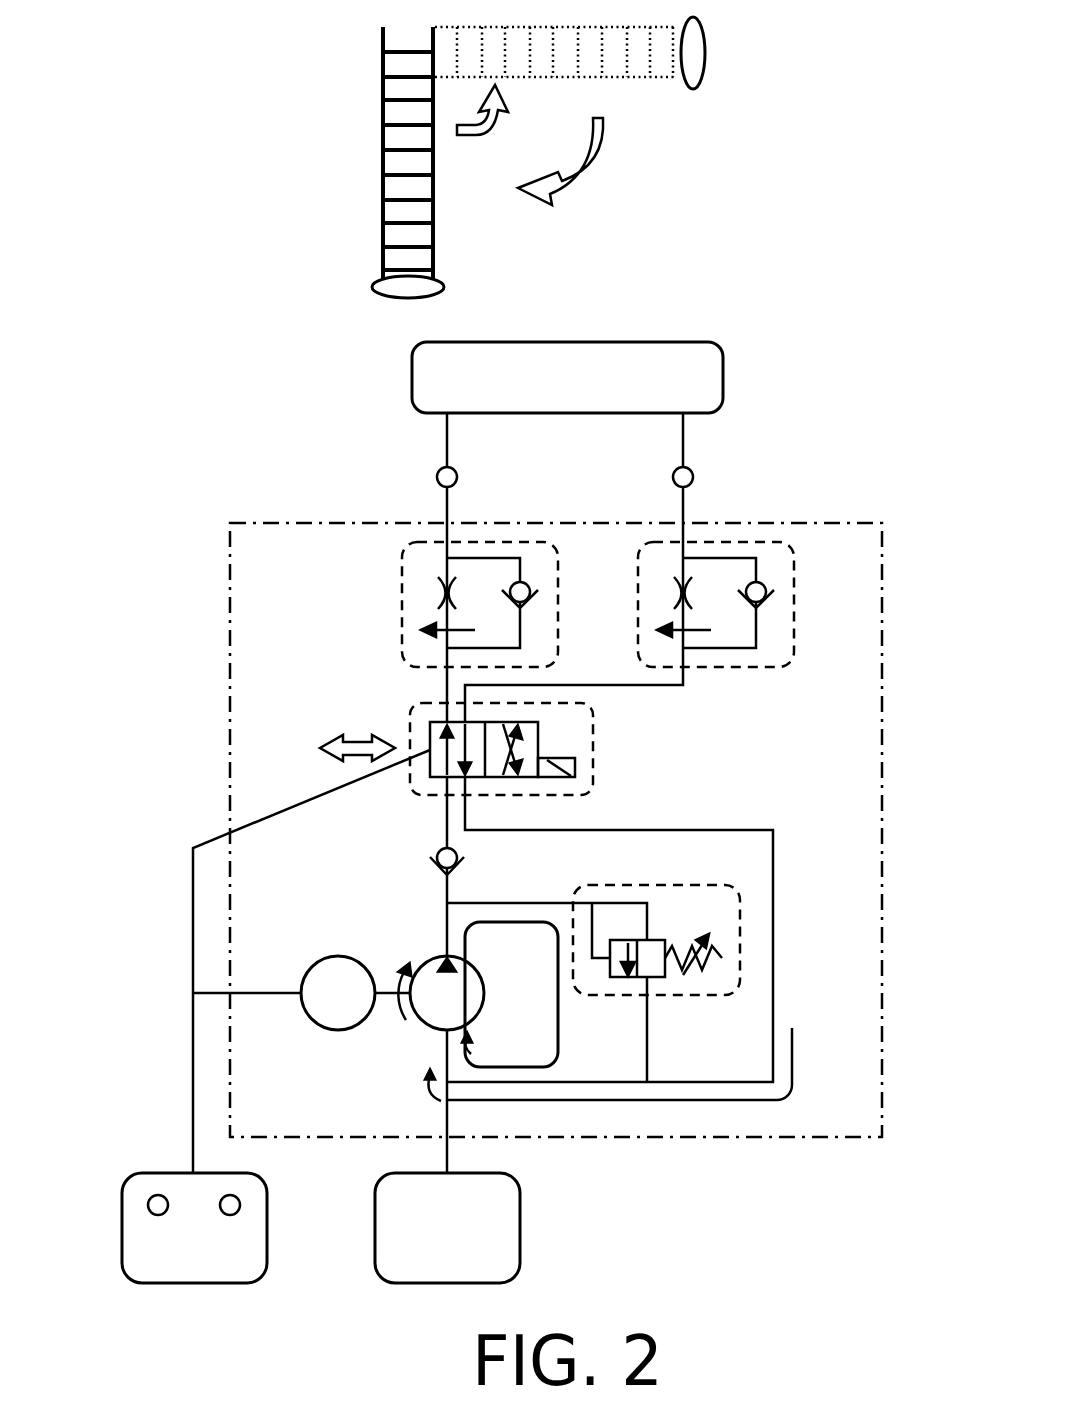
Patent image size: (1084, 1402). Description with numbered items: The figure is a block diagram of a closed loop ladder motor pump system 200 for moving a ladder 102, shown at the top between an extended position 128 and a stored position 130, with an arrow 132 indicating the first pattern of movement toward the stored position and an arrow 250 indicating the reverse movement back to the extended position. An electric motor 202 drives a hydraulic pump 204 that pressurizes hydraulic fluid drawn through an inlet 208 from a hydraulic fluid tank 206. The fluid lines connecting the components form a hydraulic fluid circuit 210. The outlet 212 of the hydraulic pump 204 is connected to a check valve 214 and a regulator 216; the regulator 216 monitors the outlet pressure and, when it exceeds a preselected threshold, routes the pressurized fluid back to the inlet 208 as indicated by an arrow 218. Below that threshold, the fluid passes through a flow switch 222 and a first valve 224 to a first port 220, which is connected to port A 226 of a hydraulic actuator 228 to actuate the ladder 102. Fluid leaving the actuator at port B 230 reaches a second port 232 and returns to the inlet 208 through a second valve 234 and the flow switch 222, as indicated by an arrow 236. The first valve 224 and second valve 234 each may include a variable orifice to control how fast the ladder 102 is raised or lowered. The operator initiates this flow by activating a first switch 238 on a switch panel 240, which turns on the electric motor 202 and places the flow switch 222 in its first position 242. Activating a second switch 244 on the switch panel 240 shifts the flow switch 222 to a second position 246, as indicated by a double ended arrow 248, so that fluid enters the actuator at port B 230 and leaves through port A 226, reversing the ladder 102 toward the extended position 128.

The ladder 102 is at (380, 100).
The extended position 128 is at (362, 298).
The stored position 130 is at (712, 40).
The arrow 132 is at (503, 133).
The arrow 250 is at (597, 170).
The closed loop ladder motor pump system 200 is at (298, 480).
The electric motor 202 is at (337, 955).
The hydraulic pump 204 is at (420, 965).
The hydraulic fluid tank 206 is at (447, 1228).
The inlet 208 is at (447, 1047).
The hydraulic fluid circuit 210 is at (667, 687).
The outlet 212 is at (443, 937).
The check valve 214 is at (440, 848).
The regulator 216 is at (656, 940).
The arrow 218 is at (511, 994).
The first port 220 is at (447, 503).
The flow switch 222 is at (590, 780).
The first valve 224 is at (454, 604).
The port A 226 is at (447, 448).
The hydraulic actuator 228 is at (567, 377).
The port B 230 is at (683, 448).
The second port 232 is at (683, 503).
The second valve 234 is at (739, 604).
The arrow 236 is at (642, 1064).
The first switch 238 is at (158, 1218).
The switch panel 240 is at (215, 1277).
The first position 242 is at (430, 720).
The second switch 244 is at (232, 1218).
The second position 246 is at (540, 738).
The double ended arrow 248 is at (357, 735).